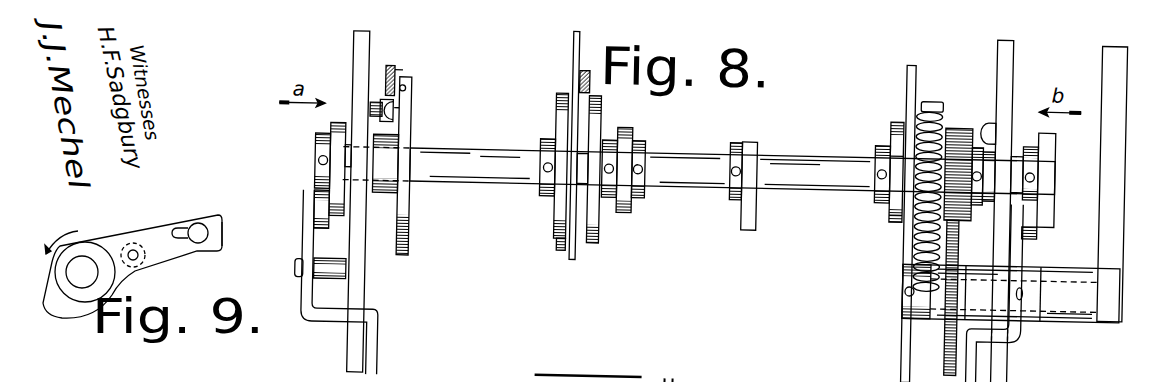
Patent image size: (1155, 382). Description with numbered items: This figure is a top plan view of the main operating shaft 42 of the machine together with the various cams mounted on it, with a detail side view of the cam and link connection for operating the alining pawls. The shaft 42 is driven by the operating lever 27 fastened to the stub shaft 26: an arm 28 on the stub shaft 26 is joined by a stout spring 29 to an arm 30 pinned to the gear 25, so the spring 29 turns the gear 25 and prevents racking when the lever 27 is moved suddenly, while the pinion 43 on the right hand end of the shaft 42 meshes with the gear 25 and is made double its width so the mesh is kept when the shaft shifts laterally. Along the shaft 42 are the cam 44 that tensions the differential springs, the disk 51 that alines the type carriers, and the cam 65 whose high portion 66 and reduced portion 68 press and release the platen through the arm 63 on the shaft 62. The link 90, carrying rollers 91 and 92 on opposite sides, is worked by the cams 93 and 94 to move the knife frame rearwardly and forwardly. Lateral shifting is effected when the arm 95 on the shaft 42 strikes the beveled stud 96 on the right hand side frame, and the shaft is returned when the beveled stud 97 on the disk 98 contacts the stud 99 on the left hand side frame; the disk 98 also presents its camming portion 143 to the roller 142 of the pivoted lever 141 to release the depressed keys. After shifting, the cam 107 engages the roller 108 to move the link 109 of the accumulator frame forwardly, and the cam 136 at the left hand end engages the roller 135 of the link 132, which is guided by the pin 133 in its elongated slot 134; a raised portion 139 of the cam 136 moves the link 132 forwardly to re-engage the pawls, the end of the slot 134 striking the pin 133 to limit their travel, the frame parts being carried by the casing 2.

In FIG. 8, the casing 2 is at (362, 240).
In FIG. 8, the gear 25 is at (947, 333).
In FIG. 8, the stub shaft 26 is at (1070, 300).
In FIG. 8, the operating lever 27 is at (1110, 47).
In FIG. 8, the arm 28 is at (910, 308).
In FIG. 8, the spring 29 is at (916, 237).
In FIG. 8, the arm 30 is at (932, 92).
In FIG. 9, the main operating shaft 42 is at (87, 275).
In FIG. 8, the main operating shaft 42 is at (685, 156).
In FIG. 8, the pinion 43 is at (953, 116).
In FIG. 8, the cam 44 is at (750, 222).
In FIG. 8, the disk 51 is at (624, 209).
In FIG. 8, the shaft 62 is at (893, 209).
In FIG. 8, the arm 63 is at (913, 72).
In FIG. 8, the cam 65 is at (878, 190).
In FIG. 8, the high portion 66 is at (897, 120).
In FIG. 8, the reduced portion 68 is at (896, 146).
In FIG. 8, the link 90 is at (571, 44).
In FIG. 8, the roller 91 is at (585, 73).
In FIG. 8, the roller 92 is at (562, 248).
In FIG. 8, the cam 93 is at (600, 123).
In FIG. 8, the cam 94 is at (558, 196).
In FIG. 8, the arm 95 is at (988, 196).
In FIG. 8, the beveled stud 96 is at (989, 110).
In FIG. 8, the beveled stud 97 is at (391, 110).
In FIG. 8, the disk 98 is at (407, 138).
In FIG. 8, the stud 99 is at (375, 107).
In FIG. 8, the cam 107 is at (1050, 160).
In FIG. 8, the roller 108 is at (1040, 226).
In FIG. 8, the link 109 is at (1018, 232).
In FIG. 9, the link 132 is at (219, 222).
In FIG. 8, the link 132 is at (382, 350).
In FIG. 9, the pin 133 is at (197, 222).
In FIG. 8, the pin 133 is at (343, 285).
In FIG. 9, the slot 134 is at (176, 230).
In FIG. 9, the roller 135 is at (133, 249).
In FIG. 8, the roller 135 is at (315, 230).
In FIG. 9, the cam 136 is at (72, 304).
In FIG. 8, the cam 136 is at (334, 184).
In FIG. 9, the raised portion 139 is at (112, 243).
In FIG. 8, the lever 141 is at (401, 75).
In FIG. 8, the roller 142 is at (402, 84).
In FIG. 8, the camming portion 143 is at (396, 108).